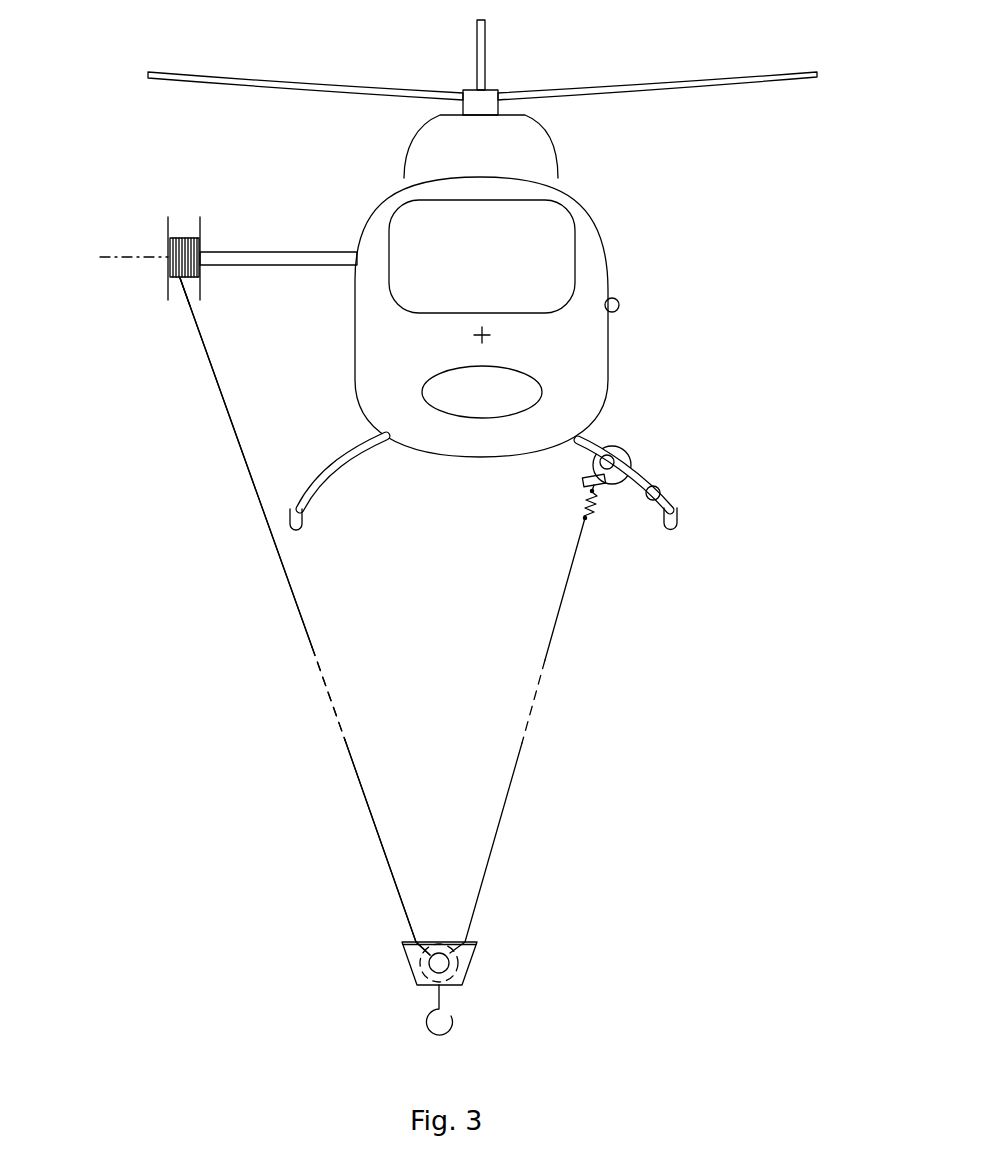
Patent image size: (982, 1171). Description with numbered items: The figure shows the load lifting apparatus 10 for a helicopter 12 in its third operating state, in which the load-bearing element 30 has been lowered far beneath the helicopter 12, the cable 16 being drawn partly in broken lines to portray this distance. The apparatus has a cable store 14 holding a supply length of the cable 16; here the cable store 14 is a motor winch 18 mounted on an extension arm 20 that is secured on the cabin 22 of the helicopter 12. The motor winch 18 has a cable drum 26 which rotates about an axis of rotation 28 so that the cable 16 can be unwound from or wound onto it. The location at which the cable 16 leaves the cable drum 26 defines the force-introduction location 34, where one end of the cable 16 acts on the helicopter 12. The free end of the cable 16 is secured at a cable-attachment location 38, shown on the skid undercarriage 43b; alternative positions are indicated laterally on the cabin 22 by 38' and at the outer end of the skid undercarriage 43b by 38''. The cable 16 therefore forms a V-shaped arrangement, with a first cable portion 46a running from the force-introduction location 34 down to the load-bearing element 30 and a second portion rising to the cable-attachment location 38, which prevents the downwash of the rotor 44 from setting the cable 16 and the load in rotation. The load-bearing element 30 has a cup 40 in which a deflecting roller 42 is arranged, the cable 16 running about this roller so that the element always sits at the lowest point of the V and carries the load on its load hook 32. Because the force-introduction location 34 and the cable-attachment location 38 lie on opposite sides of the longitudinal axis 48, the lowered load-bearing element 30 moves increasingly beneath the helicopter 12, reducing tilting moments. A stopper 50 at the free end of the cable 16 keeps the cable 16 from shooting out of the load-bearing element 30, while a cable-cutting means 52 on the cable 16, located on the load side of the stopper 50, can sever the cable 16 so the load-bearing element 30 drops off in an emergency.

The load lifting apparatus 10 is at (228, 727).
The helicopter 12 is at (673, 270).
The cable store 14 is at (185, 197).
The cable 16 is at (208, 363).
The motor winch 18 is at (168, 240).
The extension arm 20 is at (273, 257).
The cabin 22 is at (363, 355).
The cable drum 26 is at (202, 230).
The axis of rotation 28 is at (130, 258).
The load-bearing element 30 is at (400, 972).
The load hook 32 is at (423, 1023).
The force-introduction location 34 is at (175, 285).
The cable-attachment location 38 is at (543, 515).
The cable-attachment location on cabin 38' is at (640, 310).
The cable-attachment location at skid outer end 38'' is at (640, 519).
The cup 40 is at (458, 973).
The deflecting roller 42 is at (440, 957).
The skid undercarriage 43b is at (658, 487).
The rotor 44 is at (302, 83).
The first cable portion 46a is at (258, 505).
The longitudinal axis 48 is at (483, 333).
The stopper 50 is at (628, 482).
The cable-cutting means 52 is at (585, 508).